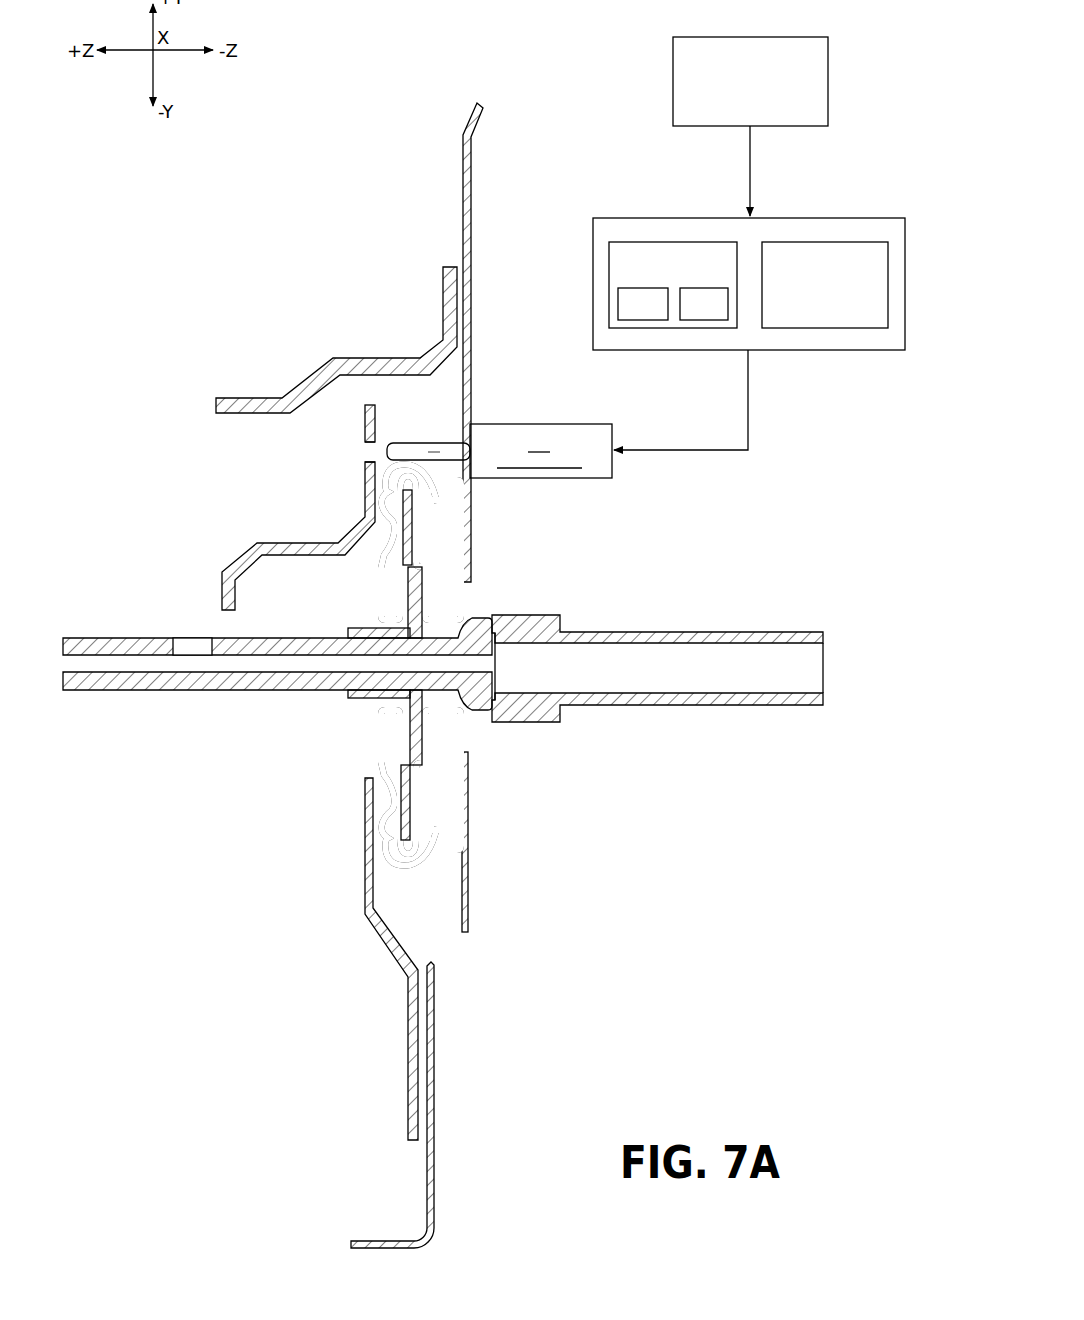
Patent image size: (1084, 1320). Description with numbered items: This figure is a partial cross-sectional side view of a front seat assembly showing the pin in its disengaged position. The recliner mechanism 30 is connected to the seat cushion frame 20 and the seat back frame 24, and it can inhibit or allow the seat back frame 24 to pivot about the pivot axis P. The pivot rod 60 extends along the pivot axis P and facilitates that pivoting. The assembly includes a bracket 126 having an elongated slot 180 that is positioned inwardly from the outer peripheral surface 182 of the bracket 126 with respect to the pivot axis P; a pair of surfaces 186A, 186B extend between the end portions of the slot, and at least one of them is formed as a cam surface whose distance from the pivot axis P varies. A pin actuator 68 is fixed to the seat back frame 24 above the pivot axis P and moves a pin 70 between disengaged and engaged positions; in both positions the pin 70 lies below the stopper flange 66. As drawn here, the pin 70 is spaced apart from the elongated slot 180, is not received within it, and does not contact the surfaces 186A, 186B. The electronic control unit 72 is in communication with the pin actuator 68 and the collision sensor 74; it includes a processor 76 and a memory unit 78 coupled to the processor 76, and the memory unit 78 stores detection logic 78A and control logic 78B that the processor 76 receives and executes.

The seat cushion frame 20 is at (437, 1100).
The seat back frame 24 is at (428, 182).
The recliner mechanism 30 is at (433, 867).
The pivot rod 60 is at (140, 693).
The stopper flange 66 is at (316, 344).
The pin actuator 68 is at (576, 483).
The pin 70 is at (398, 442).
The electronic control unit 72 is at (906, 272).
The collision sensor 74 is at (829, 82).
The processor 76 is at (889, 305).
The memory unit 78 is at (680, 242).
The detection logic 78A is at (625, 315).
The control logic 78B is at (686, 315).
The bracket 126 is at (238, 548).
The elongated slot 180 is at (364, 452).
The outer peripheral surface 182 is at (370, 404).
The surface of the elongated slot 186A is at (364, 462).
The surface of the elongated slot 186B is at (364, 443).
The pivot axis P is at (45, 662).